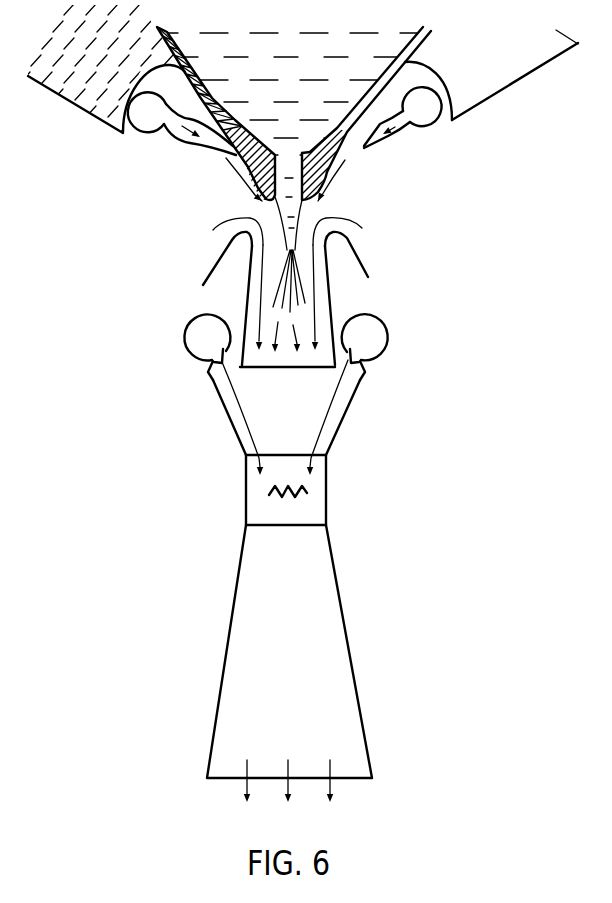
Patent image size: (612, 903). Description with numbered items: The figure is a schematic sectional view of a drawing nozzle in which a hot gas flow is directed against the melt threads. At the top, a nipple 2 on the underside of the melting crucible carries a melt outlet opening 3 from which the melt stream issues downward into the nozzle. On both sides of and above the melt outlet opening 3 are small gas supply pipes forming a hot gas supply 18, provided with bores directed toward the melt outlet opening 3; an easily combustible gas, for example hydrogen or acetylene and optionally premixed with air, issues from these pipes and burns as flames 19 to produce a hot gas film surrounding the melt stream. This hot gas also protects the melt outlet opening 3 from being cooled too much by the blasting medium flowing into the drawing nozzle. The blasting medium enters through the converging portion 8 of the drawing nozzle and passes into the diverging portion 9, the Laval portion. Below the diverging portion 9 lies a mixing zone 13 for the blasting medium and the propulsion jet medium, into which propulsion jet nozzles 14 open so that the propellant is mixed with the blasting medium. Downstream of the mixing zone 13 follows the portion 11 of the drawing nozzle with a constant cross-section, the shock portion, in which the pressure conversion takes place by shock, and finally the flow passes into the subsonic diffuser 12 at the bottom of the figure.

The nipple 2 is at (314, 182).
The melt outlet opening 3 is at (275, 197).
The converging portion of the drawing nozzle 8 is at (337, 228).
The diverging portion of the drawing nozzle 9 is at (325, 283).
The portion of the drawing nozzle with a constant cross-section 11 is at (347, 457).
The subsonic diffuser 12 is at (332, 672).
The mixing zone 13 is at (290, 410).
The propulsion jet nozzle 14 is at (210, 372).
The hot gas supply 18 is at (435, 121).
The flames 19 is at (397, 141).